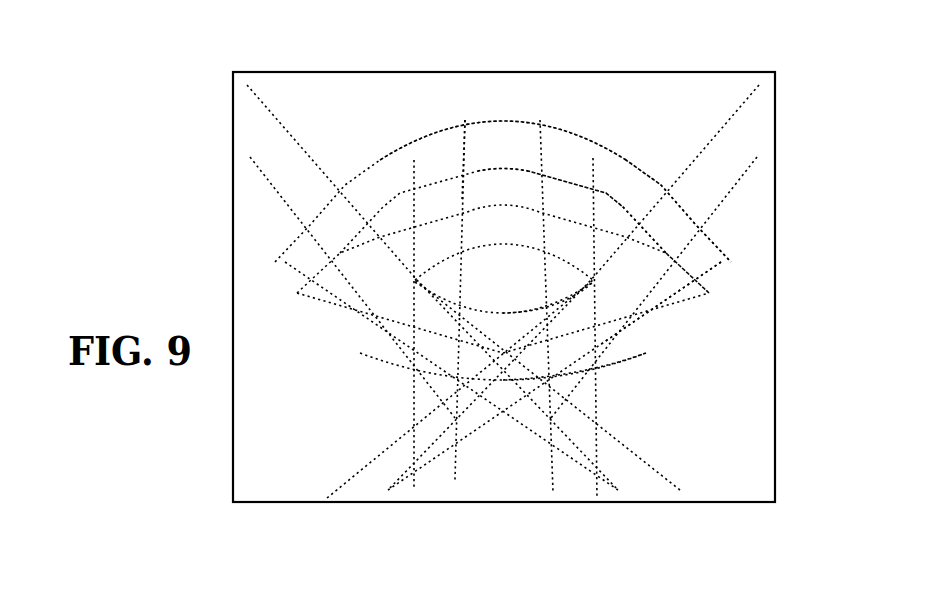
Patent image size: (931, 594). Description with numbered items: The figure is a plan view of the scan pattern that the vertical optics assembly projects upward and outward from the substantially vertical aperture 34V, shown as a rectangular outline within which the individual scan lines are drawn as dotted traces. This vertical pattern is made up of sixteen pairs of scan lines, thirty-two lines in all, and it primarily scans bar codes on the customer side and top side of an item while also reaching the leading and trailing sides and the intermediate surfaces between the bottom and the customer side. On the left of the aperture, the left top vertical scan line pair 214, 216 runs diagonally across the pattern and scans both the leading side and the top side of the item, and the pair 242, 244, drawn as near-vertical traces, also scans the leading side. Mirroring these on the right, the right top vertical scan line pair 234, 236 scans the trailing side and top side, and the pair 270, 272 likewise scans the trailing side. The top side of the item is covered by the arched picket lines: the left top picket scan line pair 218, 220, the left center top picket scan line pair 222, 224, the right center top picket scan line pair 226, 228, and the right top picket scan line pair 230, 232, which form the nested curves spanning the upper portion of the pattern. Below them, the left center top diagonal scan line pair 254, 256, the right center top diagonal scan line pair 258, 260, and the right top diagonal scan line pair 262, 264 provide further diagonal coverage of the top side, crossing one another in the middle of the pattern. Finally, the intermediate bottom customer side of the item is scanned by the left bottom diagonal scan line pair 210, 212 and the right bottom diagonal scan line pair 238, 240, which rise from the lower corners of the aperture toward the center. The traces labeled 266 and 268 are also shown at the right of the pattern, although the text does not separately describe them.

The substantially vertical aperture 34V is at (633, 72).
The left bottom diagonal scan line 210 is at (345, 487).
The left bottom diagonal scan line 212 is at (400, 495).
The left top vertical scan line 214 is at (252, 82).
The left top vertical scan line 216 is at (253, 160).
The left top picket scan line 218 is at (362, 172).
The left top picket scan line 220 is at (382, 206).
The left center top picket scan line 222 is at (461, 128).
The left center top picket scan line 224 is at (492, 186).
The right center top picket scan line 226 is at (492, 120).
The right center top picket scan line 228 is at (493, 178).
The right top picket scan line 230 is at (560, 130).
The right top picket scan line 232 is at (563, 178).
The right top vertical scan line 234 is at (756, 82).
The right top vertical scan line 236 is at (752, 160).
The right bottom diagonal scan line 238 is at (683, 488).
The right bottom diagonal scan line 240 is at (617, 490).
The leading side scan line 242 is at (414, 452).
The leading side scan line 244 is at (458, 452).
The left center top diagonal scan line 254 is at (610, 362).
The left center top diagonal scan line 256 is at (607, 292).
The right center top diagonal scan line 258 is at (362, 353).
The right center top diagonal scan line 260 is at (400, 296).
The right top diagonal scan line 262 is at (647, 300).
The right top diagonal scan line 264 is at (655, 257).
The stitch line 266 is at (718, 250).
The stitch line 268 is at (708, 290).
The trailing side scan line 270 is at (553, 478).
The trailing side scan line 272 is at (597, 452).